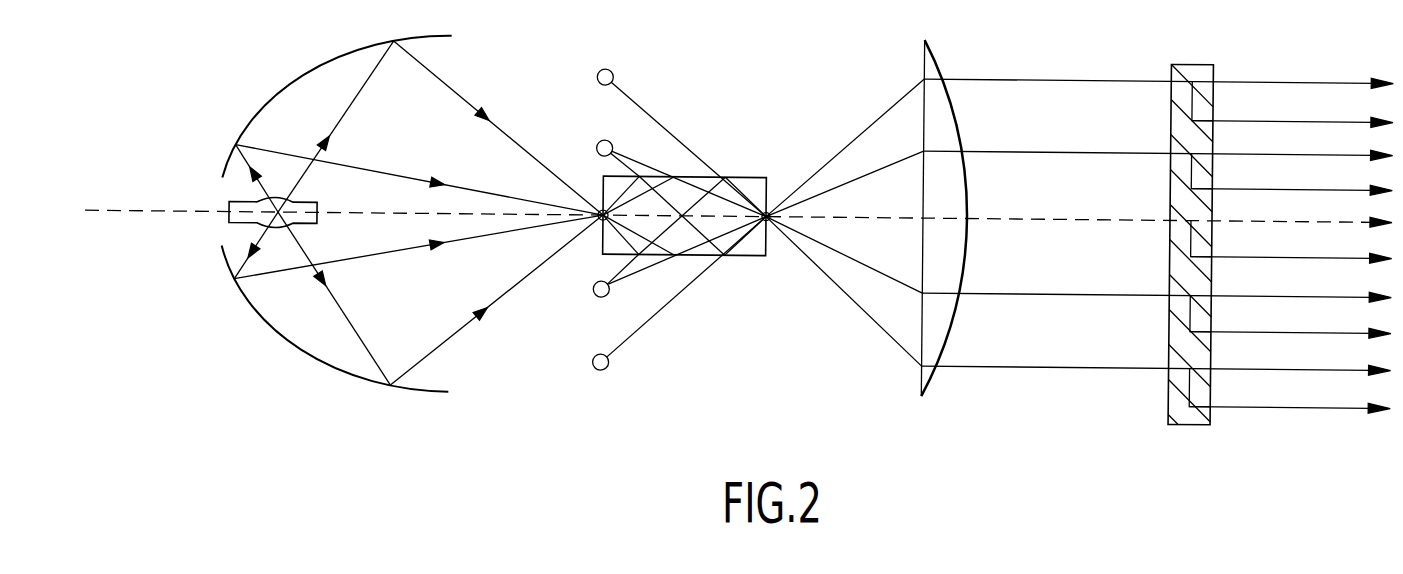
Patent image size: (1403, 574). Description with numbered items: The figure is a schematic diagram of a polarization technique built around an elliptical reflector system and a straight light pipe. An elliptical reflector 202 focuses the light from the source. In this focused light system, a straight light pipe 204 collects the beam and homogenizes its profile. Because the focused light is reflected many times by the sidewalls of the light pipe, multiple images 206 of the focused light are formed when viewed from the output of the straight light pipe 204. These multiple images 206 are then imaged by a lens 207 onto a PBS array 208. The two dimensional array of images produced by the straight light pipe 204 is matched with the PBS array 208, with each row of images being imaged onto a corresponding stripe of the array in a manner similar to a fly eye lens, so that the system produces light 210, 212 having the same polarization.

The elliptical reflector 202 is at (330, 398).
The straight light pipe 204 is at (750, 177).
The multiple images 206 is at (675, 357).
The lens 207 is at (947, 408).
The PBS array 208 is at (1220, 433).
The light 210 is at (1291, 252).
The light 212 is at (1158, 214).